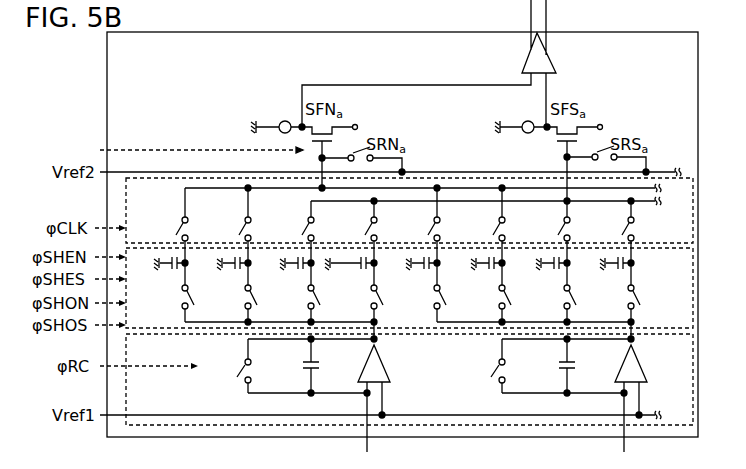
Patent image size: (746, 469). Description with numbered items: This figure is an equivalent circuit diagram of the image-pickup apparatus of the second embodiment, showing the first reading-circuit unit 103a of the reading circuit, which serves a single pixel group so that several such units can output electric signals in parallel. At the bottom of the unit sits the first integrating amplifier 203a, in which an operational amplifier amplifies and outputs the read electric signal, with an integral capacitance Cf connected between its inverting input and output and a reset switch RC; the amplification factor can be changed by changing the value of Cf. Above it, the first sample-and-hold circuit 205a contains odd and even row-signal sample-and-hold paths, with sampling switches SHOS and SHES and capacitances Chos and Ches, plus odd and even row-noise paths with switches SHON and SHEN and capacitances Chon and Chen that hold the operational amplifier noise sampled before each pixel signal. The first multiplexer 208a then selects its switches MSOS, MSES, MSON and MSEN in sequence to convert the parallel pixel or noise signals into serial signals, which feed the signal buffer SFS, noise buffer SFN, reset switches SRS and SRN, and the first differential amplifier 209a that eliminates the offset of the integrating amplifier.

The first reading-circuit unit 103a is at (107, 66).
The first differential amplifier 209a is at (557, 59).
The first multiplexer 208a is at (694, 209).
The first sample-and-hold circuit 205a is at (694, 289).
The first integrating amplifier 203a is at (694, 387).